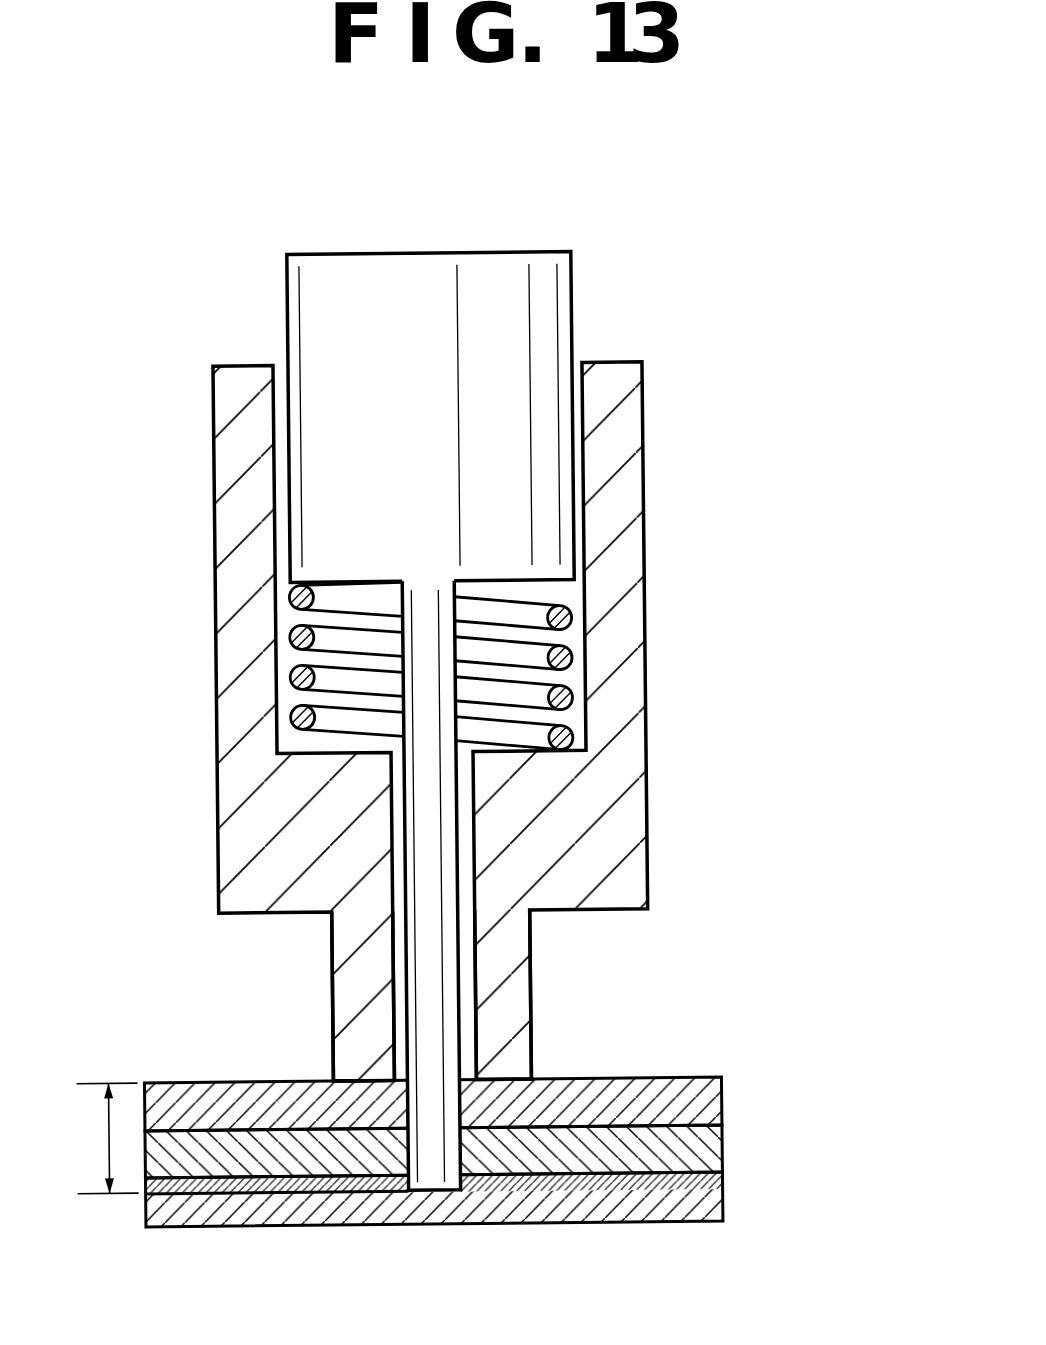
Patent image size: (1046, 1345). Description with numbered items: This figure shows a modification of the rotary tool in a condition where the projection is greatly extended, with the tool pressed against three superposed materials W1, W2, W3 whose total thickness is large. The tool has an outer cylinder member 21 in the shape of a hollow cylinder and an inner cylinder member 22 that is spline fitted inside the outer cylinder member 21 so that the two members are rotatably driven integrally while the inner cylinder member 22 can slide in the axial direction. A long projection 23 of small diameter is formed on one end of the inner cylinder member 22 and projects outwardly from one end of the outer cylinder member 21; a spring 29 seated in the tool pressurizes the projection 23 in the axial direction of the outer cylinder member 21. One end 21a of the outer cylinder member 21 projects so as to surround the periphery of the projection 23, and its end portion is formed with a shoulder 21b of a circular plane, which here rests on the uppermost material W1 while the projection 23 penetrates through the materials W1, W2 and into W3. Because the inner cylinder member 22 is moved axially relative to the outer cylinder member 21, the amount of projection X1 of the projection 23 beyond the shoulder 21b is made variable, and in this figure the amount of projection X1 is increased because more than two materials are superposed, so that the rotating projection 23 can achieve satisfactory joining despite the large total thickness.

The outer cylinder member 21 is at (648, 430).
The one end of the outer cylinder member 21a is at (528, 981).
The shoulder 21b is at (323, 1097).
The inner cylinder member 22 is at (577, 273).
The projection 23 is at (454, 1148).
The spring 29 is at (566, 662).
The first workpiece sheet W1 is at (718, 1103).
The second workpiece sheet W2 is at (719, 1151).
The third workpiece sheet W3 is at (718, 1204).
The amount of projection X1 is at (93, 1138).